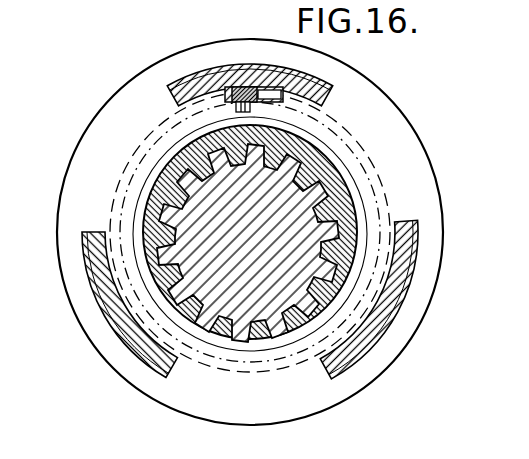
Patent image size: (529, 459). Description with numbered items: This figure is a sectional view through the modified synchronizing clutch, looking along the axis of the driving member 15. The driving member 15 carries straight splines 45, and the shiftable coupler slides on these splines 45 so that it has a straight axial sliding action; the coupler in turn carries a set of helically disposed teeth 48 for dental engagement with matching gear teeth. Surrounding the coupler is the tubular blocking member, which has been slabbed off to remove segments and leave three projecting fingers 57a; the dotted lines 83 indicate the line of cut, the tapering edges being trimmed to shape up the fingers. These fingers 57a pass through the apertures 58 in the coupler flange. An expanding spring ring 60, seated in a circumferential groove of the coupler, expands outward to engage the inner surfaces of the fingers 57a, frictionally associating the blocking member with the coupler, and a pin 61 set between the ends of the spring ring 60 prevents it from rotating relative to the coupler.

The driving member 15 is at (200, 220).
The splines 45 is at (180, 163).
The teeth 48 is at (338, 144).
The projecting fingers 57a is at (193, 85).
The apertures 58 is at (376, 344).
The expanding spring ring 60 is at (238, 92).
The pin 61 is at (282, 77).
The dotted lines 83 is at (185, 362).